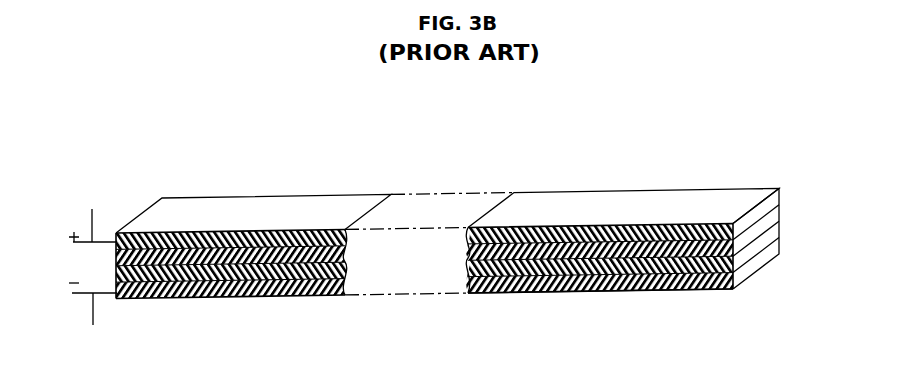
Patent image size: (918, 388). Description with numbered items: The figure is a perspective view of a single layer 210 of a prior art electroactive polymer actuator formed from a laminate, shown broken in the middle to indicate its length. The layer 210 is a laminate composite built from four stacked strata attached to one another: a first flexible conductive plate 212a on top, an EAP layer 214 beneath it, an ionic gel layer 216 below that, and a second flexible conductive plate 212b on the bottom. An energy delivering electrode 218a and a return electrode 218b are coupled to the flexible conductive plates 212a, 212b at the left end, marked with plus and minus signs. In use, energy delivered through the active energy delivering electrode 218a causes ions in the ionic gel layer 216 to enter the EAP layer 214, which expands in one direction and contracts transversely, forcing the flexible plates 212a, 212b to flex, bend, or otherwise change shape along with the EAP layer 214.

The layer 210 is at (474, 230).
The first flexible conductive plate 212a is at (679, 198).
The second flexible conductive plate 212b is at (577, 282).
The EAP layer 214 is at (770, 215).
The ionic gel layer 216 is at (770, 235).
The energy delivering electrode 218a is at (93, 211).
The return electrode 218b is at (93, 318).